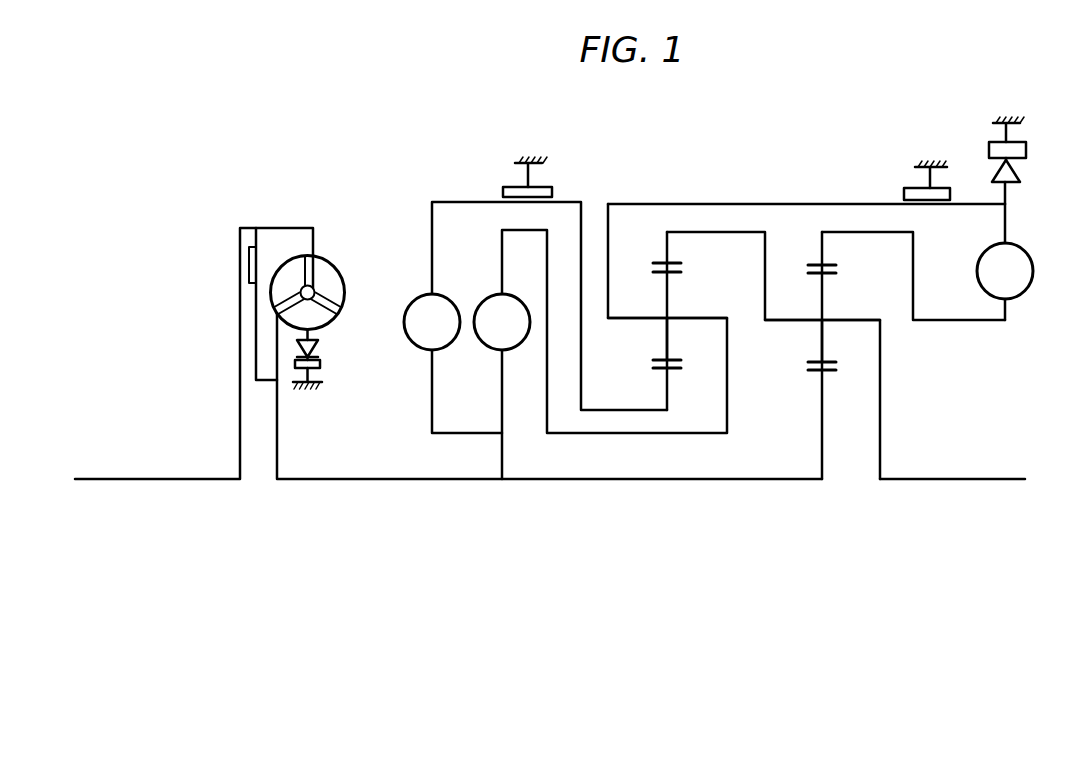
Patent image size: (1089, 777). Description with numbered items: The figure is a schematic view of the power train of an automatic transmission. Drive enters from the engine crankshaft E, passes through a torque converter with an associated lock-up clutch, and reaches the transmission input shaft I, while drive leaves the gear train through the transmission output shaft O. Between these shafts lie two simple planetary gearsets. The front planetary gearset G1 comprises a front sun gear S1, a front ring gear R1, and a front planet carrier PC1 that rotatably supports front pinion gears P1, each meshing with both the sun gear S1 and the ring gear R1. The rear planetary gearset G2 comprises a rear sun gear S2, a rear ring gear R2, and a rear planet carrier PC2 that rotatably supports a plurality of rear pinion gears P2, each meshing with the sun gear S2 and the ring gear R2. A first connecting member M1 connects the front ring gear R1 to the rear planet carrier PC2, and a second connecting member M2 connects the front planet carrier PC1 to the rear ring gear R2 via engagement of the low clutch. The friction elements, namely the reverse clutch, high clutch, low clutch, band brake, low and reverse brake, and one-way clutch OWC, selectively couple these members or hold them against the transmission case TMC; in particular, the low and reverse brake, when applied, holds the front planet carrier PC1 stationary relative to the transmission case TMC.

The engine crankshaft E is at (160, 478).
The transmission input shaft I is at (368, 478).
The transmission output shaft O is at (958, 479).
The transmission case TMC is at (536, 172).
The second connecting member M2 is at (718, 204).
The first connecting member M1 is at (718, 234).
The front planetary gearset G1 is at (667, 287).
The front ring gear R1 is at (663, 234).
The front planet carrier PC1 is at (639, 318).
The front pinion gears P1 is at (665, 333).
The front sun gear S1 is at (665, 395).
The rear planetary gearset G2 is at (885, 322).
The rear ring gear R2 is at (819, 235).
The rear planet carrier PC2 is at (792, 320).
The rear pinion gears P2 is at (820, 337).
The rear sun gear S2 is at (820, 395).
The one-way clutch OWC is at (1022, 178).